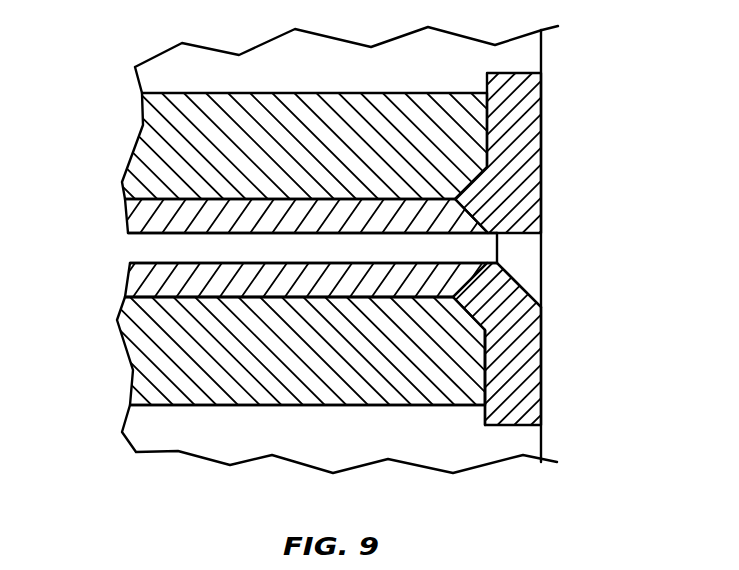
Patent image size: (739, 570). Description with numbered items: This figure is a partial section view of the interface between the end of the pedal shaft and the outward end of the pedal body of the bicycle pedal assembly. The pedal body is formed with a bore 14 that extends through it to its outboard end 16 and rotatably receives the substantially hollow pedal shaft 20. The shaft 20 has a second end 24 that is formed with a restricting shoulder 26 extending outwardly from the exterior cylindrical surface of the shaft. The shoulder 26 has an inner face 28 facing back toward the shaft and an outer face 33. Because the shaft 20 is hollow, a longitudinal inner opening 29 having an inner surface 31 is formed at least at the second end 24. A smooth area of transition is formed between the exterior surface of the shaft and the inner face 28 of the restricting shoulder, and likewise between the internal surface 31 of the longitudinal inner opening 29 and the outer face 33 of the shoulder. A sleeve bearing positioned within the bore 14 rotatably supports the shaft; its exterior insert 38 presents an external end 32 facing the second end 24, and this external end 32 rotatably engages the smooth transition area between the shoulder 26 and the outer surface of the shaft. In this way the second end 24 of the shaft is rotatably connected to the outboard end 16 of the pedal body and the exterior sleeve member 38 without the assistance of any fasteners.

The bore 14 is at (172, 405).
The outboard end 16 is at (522, 58).
The pedal shaft 20 is at (143, 285).
The second end 24 is at (310, 283).
The restricting shoulder 26 is at (527, 128).
The inner face 28 is at (500, 293).
The longitudinal inner opening 29 is at (153, 250).
The inner surface 31 is at (476, 258).
The external end 32 is at (463, 358).
The outer face 33 is at (525, 327).
The insert 38 is at (240, 358).